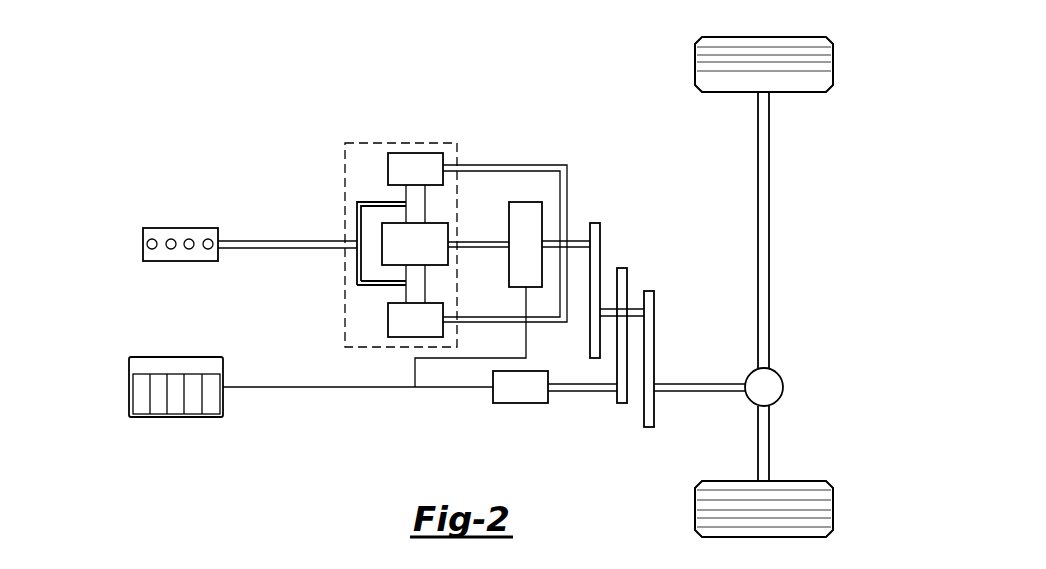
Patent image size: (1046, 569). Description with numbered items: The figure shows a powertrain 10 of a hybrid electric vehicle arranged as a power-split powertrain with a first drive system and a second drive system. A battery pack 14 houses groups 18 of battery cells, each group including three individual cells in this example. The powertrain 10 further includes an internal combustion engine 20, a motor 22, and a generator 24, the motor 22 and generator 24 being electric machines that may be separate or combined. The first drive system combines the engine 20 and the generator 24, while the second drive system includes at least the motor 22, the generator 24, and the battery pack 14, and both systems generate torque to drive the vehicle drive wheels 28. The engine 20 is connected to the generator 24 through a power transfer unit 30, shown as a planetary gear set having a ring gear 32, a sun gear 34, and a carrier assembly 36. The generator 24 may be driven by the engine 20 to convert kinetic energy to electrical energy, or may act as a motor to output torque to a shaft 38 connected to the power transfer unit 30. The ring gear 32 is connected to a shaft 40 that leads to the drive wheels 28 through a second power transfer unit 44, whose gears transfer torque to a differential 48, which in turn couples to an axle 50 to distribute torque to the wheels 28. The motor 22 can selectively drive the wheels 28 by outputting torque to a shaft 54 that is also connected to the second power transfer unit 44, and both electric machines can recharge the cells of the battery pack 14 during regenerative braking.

The powertrain 10 is at (219, 76).
The battery pack 14 is at (311, 389).
The groups of battery cells 18 is at (156, 404).
The internal combustion engine 20 is at (143, 228).
The motor 22 is at (520, 403).
The generator 24 is at (544, 212).
The vehicle drive wheels 28 is at (695, 65).
The power transfer unit 30 is at (458, 146).
The ring gear 32 is at (388, 170).
The sun gear 34 is at (440, 265).
The carrier assembly 36 is at (357, 222).
The shaft 38 is at (483, 238).
The shaft 40 is at (579, 252).
The second power transfer unit 44 is at (665, 322).
The differential 48 is at (783, 387).
The axle 50 is at (770, 232).
The shaft 54 is at (583, 392).